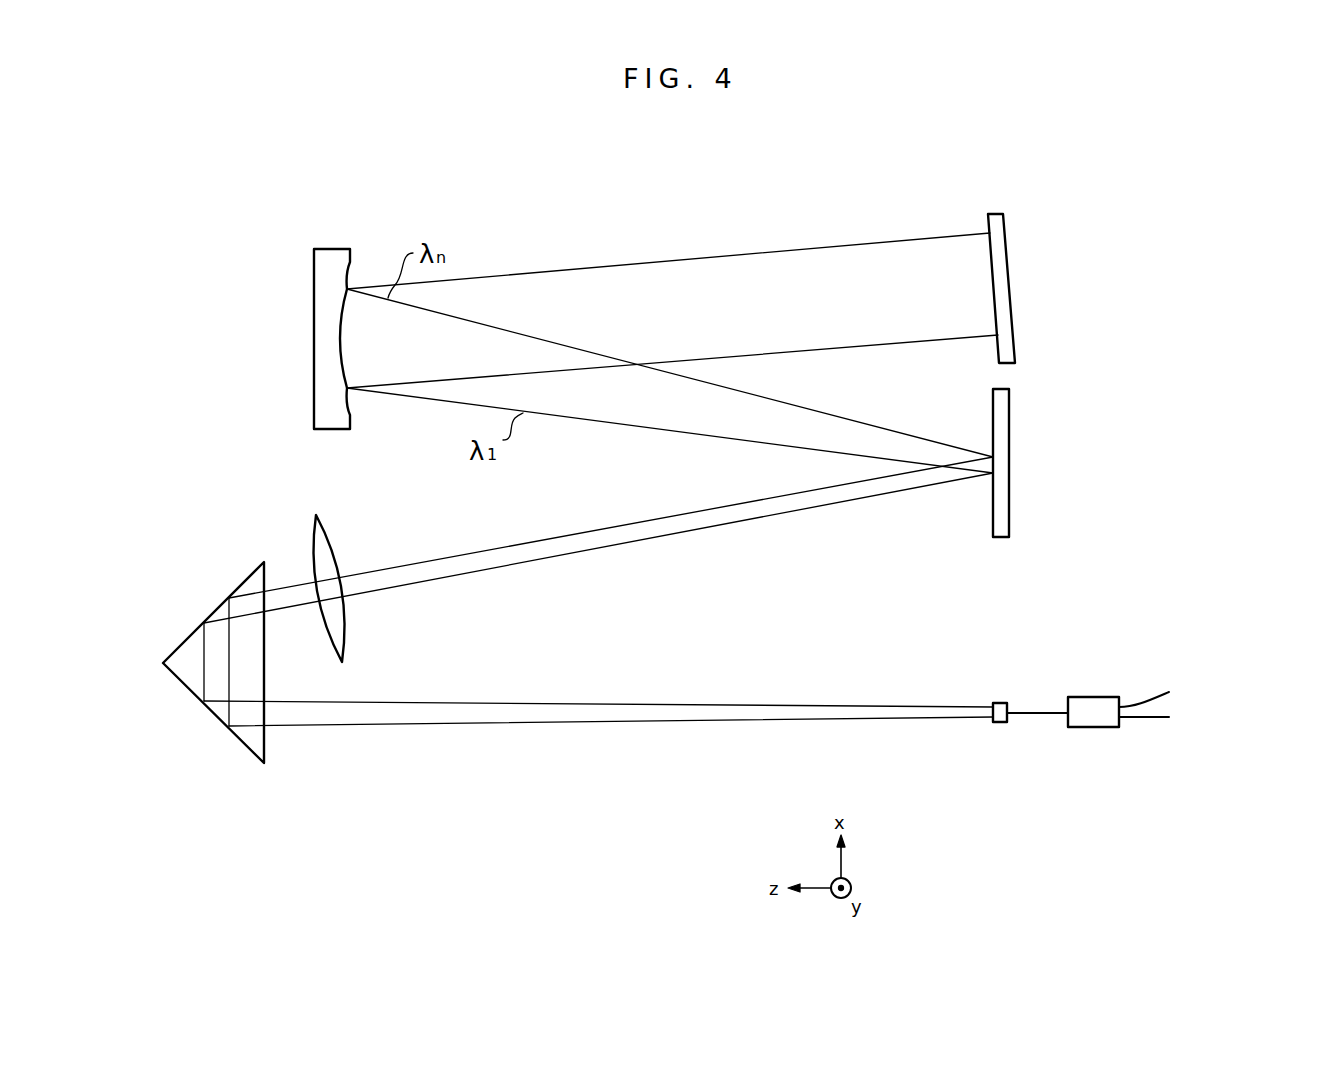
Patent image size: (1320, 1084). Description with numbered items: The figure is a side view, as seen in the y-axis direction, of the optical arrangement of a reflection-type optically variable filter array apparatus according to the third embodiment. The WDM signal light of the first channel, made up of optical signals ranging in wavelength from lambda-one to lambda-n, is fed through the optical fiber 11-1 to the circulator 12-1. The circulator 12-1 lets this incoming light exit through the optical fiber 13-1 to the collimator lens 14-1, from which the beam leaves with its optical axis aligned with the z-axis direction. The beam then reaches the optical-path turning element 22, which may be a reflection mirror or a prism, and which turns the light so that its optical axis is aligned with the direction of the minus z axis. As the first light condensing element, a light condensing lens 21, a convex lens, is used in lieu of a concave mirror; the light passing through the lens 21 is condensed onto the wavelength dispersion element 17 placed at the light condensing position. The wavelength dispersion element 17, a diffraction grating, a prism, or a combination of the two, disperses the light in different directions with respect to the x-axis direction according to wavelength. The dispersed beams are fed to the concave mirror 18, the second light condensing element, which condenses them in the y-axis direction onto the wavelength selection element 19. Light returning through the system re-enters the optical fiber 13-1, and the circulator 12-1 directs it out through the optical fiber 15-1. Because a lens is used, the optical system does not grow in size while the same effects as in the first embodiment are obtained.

The concave mirror 18 is at (313, 290).
The wavelength selection element 19 is at (1008, 262).
The wavelength dispersion element 17 is at (1008, 438).
The light condensing lens 21 is at (315, 540).
The optical-path turning element 22 is at (212, 614).
The collimator lens 14-1 is at (993, 723).
The optical fiber 13-1 is at (1047, 713).
The circulator 12-1 is at (1097, 727).
The optical fiber 11-1 is at (1142, 696).
The optical fiber 15-1 is at (1183, 727).